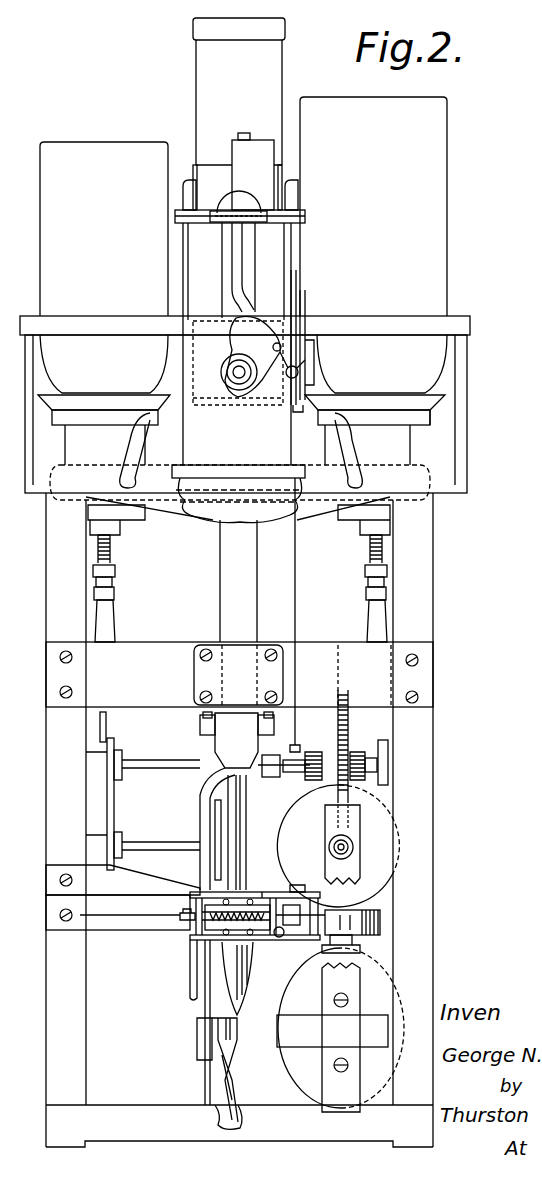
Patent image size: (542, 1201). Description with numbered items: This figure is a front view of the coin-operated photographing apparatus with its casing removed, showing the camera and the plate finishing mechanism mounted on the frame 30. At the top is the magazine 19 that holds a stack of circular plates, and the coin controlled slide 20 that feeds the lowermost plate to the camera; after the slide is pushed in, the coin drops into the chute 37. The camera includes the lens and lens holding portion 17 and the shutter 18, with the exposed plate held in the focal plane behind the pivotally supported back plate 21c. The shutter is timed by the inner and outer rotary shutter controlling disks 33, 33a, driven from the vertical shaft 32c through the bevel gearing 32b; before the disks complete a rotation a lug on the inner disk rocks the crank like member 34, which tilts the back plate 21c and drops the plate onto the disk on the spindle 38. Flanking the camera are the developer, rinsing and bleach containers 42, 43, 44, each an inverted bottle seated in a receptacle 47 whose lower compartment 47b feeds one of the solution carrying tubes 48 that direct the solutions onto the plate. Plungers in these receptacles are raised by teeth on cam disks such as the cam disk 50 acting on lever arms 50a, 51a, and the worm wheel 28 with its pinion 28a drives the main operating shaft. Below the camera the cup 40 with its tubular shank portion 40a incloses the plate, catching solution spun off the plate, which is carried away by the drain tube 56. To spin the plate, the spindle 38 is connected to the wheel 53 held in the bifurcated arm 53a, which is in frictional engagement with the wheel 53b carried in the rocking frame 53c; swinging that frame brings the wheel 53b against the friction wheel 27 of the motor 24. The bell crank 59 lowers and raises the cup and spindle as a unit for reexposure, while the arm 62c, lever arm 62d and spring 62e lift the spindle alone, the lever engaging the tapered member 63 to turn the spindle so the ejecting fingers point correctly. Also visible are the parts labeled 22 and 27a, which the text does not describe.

The lens and lens holding portion 17 is at (232, 388).
The shutter 18 is at (245, 398).
The magazine 19 is at (239, 91).
The slide 20 is at (238, 206).
The back plate 21c is at (197, 350).
The valve block 22 is at (253, 171).
The motor 24 is at (340, 1030).
The friction wheel 27 is at (381, 922).
The disc 27a is at (338, 846).
The worm wheel 28 is at (338, 722).
The pinion 28a is at (366, 772).
The frame 30 is at (435, 808).
The bevel gearing 32b is at (305, 770).
The vertical shaft 32c is at (297, 622).
The inner shutter controlling disk 33 is at (300, 296).
The outer shutter controlling disk 33a is at (306, 310).
The crank like member 34 is at (298, 412).
The coin chute 37 is at (240, 263).
The spindle 38 is at (236, 800).
The cup 40 is at (235, 505).
The tubular shank portion 40a is at (220, 572).
The developer container 42 is at (104, 267).
The rinsing solution container 43 is at (373, 245).
The bleach container 44 is at (288, 198).
The receptacle 47 is at (445, 420).
The lower compartment 47b is at (112, 548).
The solution carrying tubes 48 is at (128, 438).
The cam disk 50 is at (110, 797).
The lever arm 50a is at (112, 738).
The lever arm 51a is at (380, 748).
The wheel 53 is at (196, 936).
The bifurcated arm 53a is at (148, 918).
The friction wheel 53b is at (288, 905).
The rocking frame 53c is at (255, 882).
The drain tube 56 is at (200, 785).
The bell crank 59 is at (213, 733).
The arm 62c is at (203, 1003).
The lever arm 62d is at (218, 1090).
The spring 62e is at (222, 1055).
The tapered member 63 is at (247, 972).